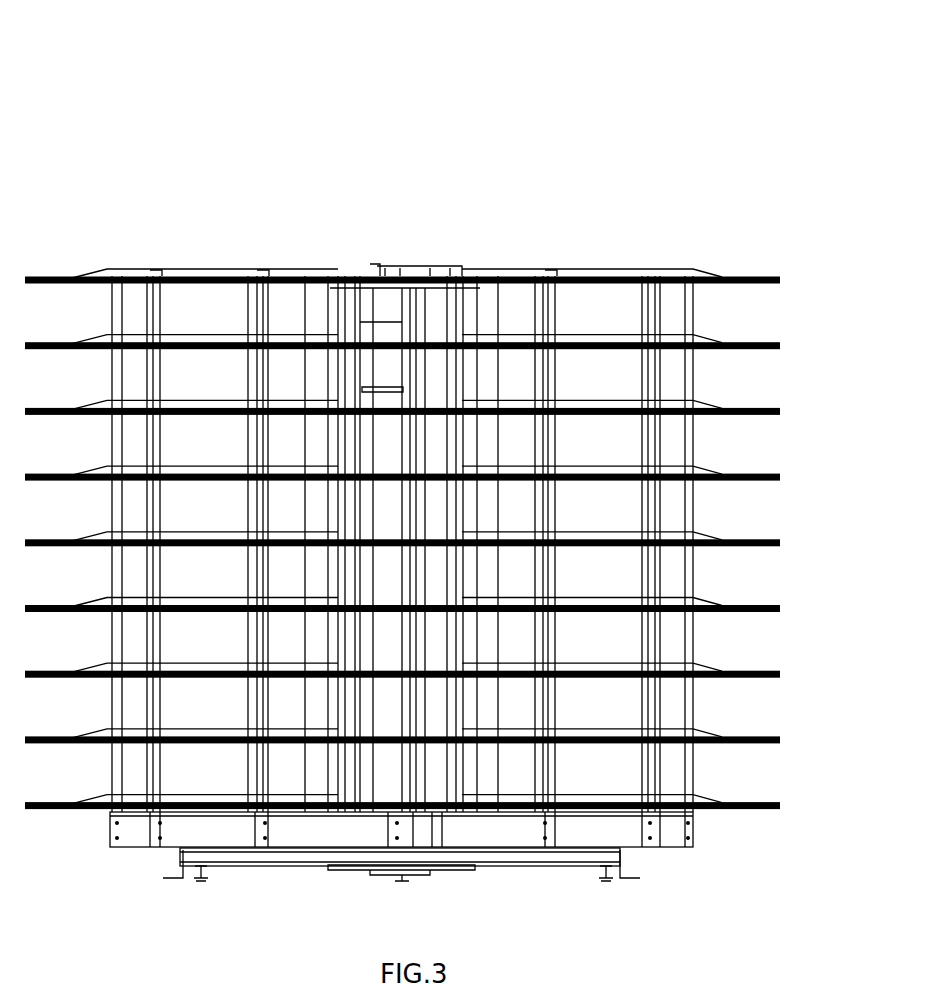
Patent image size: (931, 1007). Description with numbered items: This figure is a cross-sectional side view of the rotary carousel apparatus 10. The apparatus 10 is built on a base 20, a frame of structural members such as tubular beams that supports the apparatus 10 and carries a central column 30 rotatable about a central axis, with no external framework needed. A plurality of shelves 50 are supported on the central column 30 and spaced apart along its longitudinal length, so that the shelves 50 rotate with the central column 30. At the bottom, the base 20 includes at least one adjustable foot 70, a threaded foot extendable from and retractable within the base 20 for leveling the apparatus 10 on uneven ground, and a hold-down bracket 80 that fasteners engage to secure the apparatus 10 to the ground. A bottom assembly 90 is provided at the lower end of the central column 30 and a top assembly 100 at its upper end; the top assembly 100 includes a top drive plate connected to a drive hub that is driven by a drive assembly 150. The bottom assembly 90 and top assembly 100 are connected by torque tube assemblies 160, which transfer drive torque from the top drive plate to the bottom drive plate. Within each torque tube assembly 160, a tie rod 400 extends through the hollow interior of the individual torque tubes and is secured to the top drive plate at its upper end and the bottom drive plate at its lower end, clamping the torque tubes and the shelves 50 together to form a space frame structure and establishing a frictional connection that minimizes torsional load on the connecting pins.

The rotary carousel apparatus 10 is at (547, 78).
The base 20 is at (268, 858).
The central column 30 is at (383, 770).
The shelf 50 is at (781, 281).
The adjustable foot 70 is at (606, 882).
The hold-down bracket 80 is at (633, 885).
The bottom assembly 90 is at (427, 885).
The top assembly 100 is at (442, 252).
The drive assembly 150 is at (375, 363).
The torque tube assembly 160 is at (316, 310).
The tie rod 400 is at (345, 316).